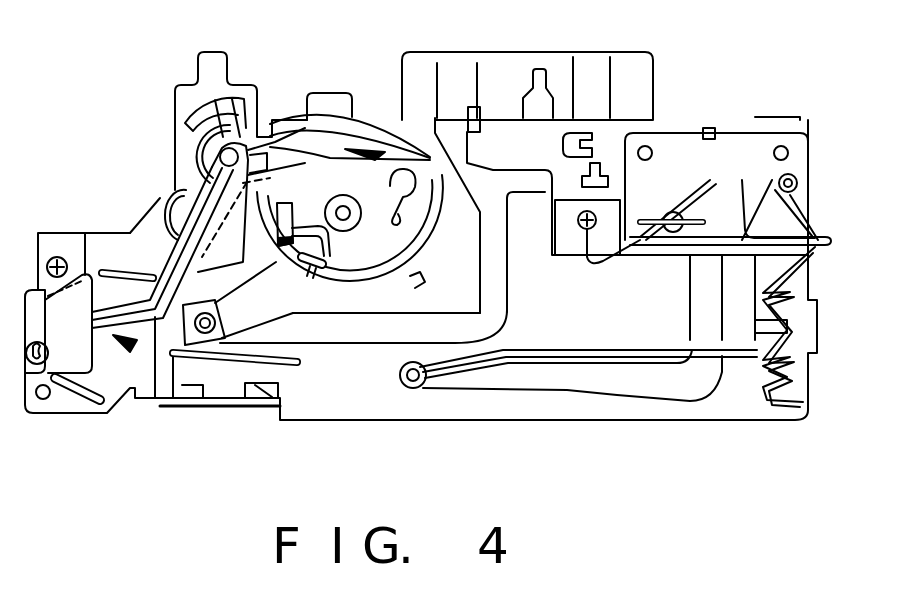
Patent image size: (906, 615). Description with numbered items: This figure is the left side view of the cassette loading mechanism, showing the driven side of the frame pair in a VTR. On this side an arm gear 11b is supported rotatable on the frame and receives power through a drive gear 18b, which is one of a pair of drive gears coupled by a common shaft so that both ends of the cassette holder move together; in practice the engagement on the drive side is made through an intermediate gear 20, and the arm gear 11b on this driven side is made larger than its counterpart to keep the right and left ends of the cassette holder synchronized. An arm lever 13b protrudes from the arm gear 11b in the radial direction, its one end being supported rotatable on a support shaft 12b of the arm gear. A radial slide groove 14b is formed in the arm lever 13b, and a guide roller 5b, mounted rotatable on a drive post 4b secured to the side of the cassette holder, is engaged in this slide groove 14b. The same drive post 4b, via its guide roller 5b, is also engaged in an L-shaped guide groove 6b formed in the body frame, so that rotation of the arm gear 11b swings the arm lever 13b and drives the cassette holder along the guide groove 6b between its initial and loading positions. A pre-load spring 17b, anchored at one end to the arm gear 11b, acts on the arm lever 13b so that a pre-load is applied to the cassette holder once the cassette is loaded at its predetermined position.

The intermediate gear 20 is at (195, 150).
The drive gear 18b is at (164, 203).
The arm gear 11b is at (328, 92).
The support shaft 12b is at (349, 195).
The L-shaped guide groove 6b is at (508, 278).
The arm lever 13b is at (171, 407).
The drive post 4b is at (208, 407).
The guide roller 5b is at (230, 358).
The slide groove 14b is at (272, 290).
The pre-load spring 17b is at (330, 262).